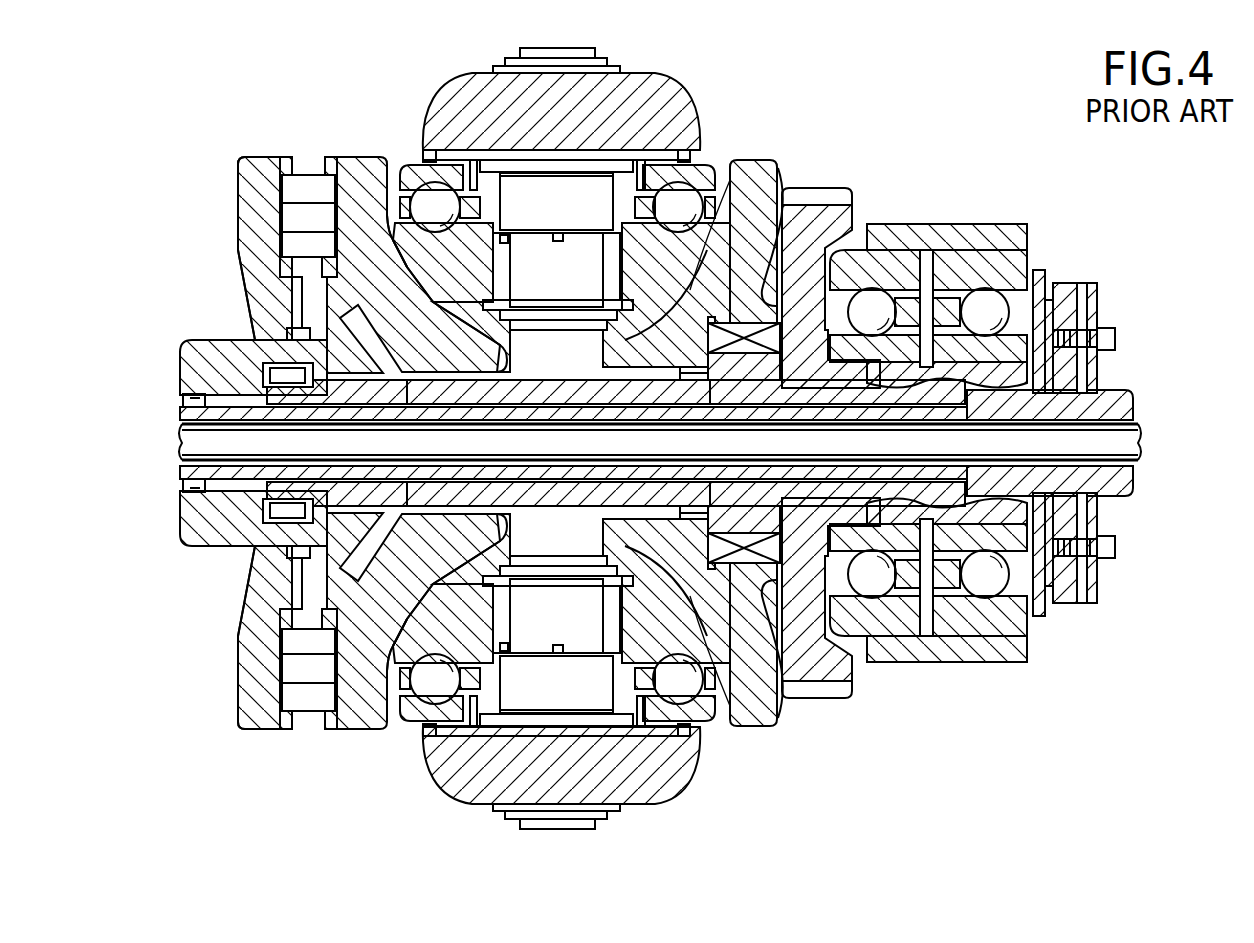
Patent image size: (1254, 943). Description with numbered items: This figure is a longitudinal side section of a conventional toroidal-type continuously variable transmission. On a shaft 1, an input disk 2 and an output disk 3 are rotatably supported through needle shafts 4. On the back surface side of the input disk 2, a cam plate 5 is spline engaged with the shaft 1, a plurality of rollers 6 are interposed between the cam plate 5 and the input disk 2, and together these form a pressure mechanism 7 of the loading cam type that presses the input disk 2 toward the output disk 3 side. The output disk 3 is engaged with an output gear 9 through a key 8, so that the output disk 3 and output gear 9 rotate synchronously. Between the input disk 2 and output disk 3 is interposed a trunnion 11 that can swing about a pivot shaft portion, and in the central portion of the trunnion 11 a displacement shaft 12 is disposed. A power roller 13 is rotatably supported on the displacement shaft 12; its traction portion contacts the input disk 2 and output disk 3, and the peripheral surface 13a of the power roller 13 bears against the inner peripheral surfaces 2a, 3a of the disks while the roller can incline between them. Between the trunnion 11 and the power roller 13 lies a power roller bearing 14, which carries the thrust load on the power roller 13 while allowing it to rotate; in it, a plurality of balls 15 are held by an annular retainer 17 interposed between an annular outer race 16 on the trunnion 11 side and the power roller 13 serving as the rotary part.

The shaft 1 is at (252, 504).
The input disk 2 is at (347, 158).
The inner peripheral surface of the input disk 2a is at (393, 240).
The output disk 3 is at (764, 162).
The inner peripheral surface of the output disk 3a is at (720, 228).
The needle shafts 4 is at (600, 364).
The cam plate 5 is at (250, 178).
The rollers 6 is at (311, 183).
The pressure mechanism 7 is at (238, 152).
The key 8 is at (740, 540).
The output gear 9 is at (829, 186).
The trunnion 11 is at (645, 88).
The displacement shaft 12 is at (578, 245).
The power roller 13 is at (428, 305).
The peripheral surface of the power roller 13a is at (790, 245).
The power roller bearing 14 is at (406, 162).
The balls 15 is at (684, 197).
The annular outer race 16 is at (665, 142).
The annular retainer 17 is at (780, 170).